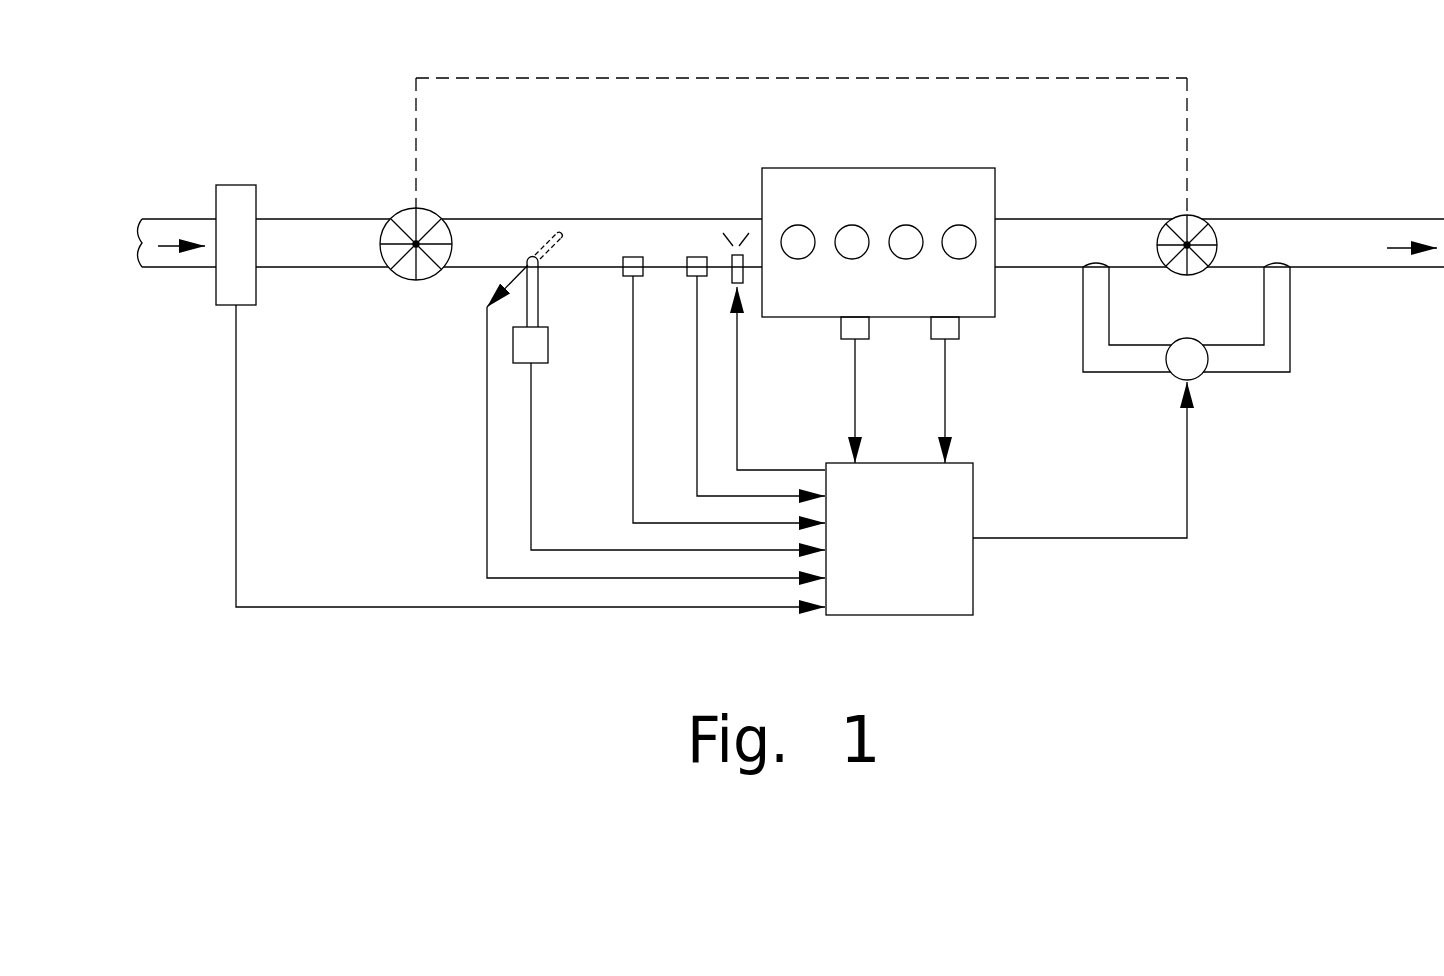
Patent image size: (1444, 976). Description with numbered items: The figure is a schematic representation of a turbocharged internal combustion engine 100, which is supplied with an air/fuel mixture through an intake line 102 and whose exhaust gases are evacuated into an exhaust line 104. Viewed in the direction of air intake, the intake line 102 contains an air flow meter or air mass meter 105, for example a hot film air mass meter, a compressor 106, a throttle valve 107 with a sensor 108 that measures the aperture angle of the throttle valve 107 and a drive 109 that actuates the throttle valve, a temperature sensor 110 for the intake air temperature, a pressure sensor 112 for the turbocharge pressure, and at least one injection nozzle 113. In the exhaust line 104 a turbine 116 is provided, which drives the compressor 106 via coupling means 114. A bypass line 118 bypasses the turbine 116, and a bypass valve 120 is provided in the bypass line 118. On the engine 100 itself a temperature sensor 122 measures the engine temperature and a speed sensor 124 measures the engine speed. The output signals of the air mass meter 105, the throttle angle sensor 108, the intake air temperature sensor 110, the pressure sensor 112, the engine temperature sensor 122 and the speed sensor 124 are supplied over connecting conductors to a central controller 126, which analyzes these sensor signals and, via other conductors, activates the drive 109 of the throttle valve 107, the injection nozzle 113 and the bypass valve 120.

The internal combustion engine 100 is at (897, 182).
The intake line 102 is at (320, 228).
The exhaust line 104 is at (1057, 230).
The air flow meter or air mass meter 105 is at (237, 200).
The compressor 106 is at (406, 217).
The throttle valve 107 is at (550, 232).
The sensor 108 is at (530, 258).
The drive 109 is at (540, 345).
The temperature sensor 110 is at (629, 256).
The pressure sensor 112 is at (689, 255).
The injection nozzle 113 is at (737, 254).
The coupling means 114 is at (962, 76).
The turbine 116 is at (1198, 222).
The bypass line 118 is at (1258, 365).
The bypass valve 120 is at (1172, 375).
The temperature sensor 122 is at (845, 327).
The speed sensor 124 is at (957, 327).
The central controller 126 is at (962, 585).